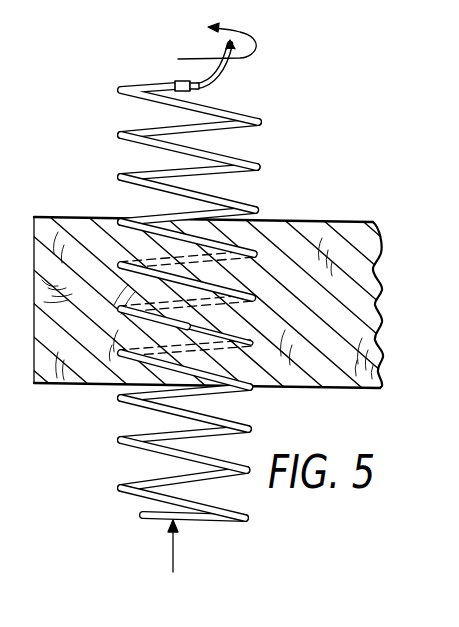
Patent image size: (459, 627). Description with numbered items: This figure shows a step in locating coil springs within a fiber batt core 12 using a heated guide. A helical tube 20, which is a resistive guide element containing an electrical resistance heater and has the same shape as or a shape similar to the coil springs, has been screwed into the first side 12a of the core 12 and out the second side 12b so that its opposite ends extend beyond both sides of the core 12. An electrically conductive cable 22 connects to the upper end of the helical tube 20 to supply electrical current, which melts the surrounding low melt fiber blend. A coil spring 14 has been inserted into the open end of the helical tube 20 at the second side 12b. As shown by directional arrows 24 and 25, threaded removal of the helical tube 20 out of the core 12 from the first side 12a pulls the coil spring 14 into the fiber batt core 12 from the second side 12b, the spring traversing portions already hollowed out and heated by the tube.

The fiber batt core 12 is at (368, 311).
The first side 12a is at (333, 220).
The second side 12b is at (352, 388).
The coil spring 14 is at (120, 443).
The helical tube 20 is at (183, 302).
The electrically conductive cable 22 is at (222, 68).
The directional arrow 24 is at (262, 47).
The directional arrow 25 is at (173, 557).